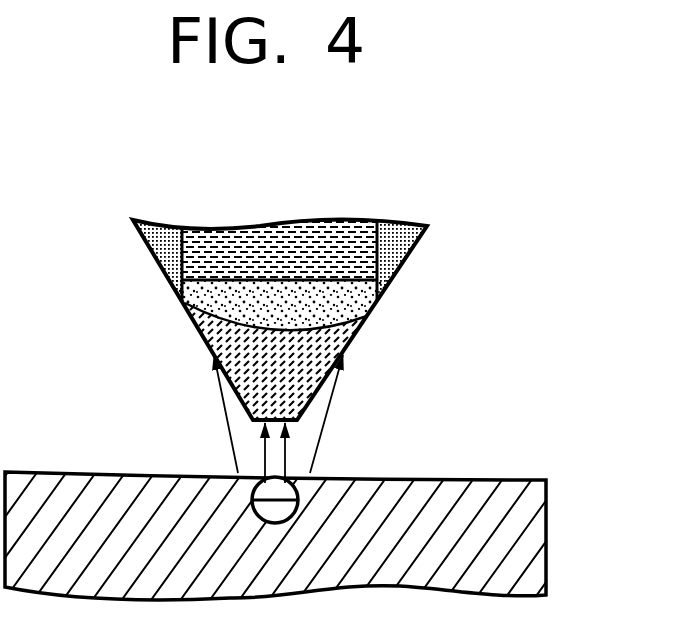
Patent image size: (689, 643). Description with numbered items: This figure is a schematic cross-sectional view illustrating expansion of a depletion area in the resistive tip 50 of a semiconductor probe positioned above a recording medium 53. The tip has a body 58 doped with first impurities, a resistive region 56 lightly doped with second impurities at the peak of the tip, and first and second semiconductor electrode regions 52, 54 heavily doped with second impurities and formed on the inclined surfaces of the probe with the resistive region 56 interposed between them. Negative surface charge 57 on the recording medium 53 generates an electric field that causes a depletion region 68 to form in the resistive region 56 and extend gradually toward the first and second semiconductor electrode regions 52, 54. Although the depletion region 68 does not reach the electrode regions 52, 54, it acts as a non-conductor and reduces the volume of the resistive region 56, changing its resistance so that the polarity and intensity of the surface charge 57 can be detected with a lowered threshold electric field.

The resistive tip 50 is at (301, 313).
The first semiconductor electrode region 52 is at (153, 244).
The second semiconductor electrode region 54 is at (400, 254).
The body 58 is at (284, 229).
The resistive region 56 is at (200, 308).
The depletion region 68 is at (222, 348).
The surface charge 57 is at (289, 480).
The recording medium 53 is at (537, 527).